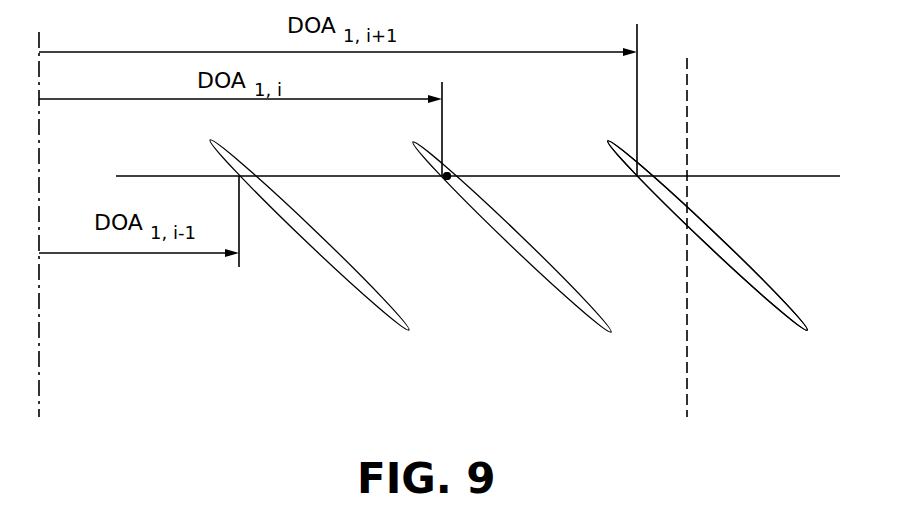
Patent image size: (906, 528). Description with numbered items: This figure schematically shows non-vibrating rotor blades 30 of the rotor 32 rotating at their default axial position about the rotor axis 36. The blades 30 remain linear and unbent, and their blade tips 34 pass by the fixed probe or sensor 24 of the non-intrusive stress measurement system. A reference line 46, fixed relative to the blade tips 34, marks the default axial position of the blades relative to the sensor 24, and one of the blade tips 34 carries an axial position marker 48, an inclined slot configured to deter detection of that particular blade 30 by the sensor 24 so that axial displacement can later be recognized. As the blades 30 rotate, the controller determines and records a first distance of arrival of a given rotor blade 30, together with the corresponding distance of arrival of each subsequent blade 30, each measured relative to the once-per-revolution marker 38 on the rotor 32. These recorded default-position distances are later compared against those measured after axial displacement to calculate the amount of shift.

The sensor 24 is at (445, 180).
The rotor blades 30 is at (593, 305).
The rotor 32 is at (730, 54).
The blade tips 34 is at (707, 235).
The rotor axis 36 is at (687, 372).
The once-per-revolution marker 38 is at (39, 338).
The reference line 46 is at (708, 175).
The axial position marker 48 is at (458, 171).